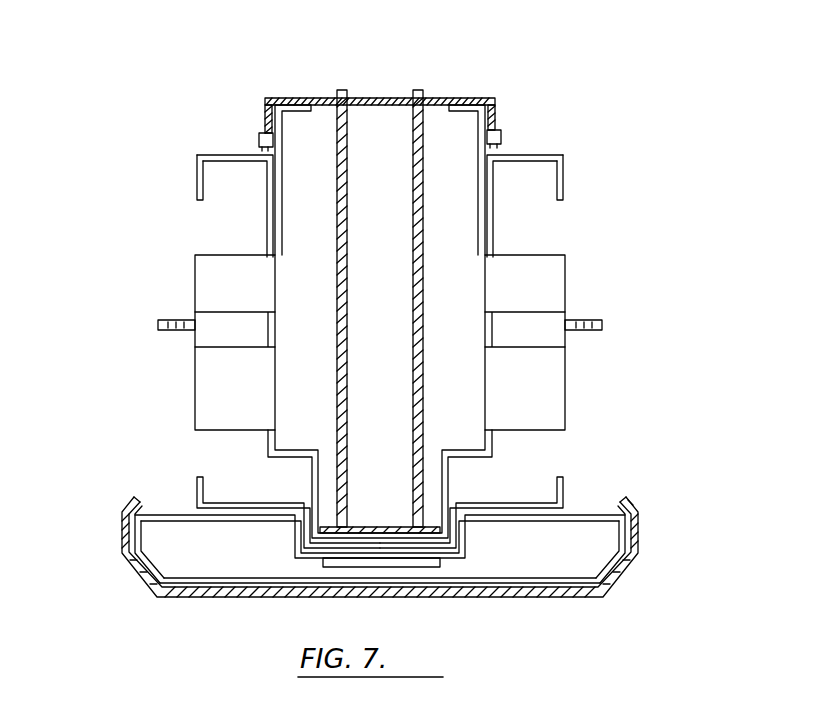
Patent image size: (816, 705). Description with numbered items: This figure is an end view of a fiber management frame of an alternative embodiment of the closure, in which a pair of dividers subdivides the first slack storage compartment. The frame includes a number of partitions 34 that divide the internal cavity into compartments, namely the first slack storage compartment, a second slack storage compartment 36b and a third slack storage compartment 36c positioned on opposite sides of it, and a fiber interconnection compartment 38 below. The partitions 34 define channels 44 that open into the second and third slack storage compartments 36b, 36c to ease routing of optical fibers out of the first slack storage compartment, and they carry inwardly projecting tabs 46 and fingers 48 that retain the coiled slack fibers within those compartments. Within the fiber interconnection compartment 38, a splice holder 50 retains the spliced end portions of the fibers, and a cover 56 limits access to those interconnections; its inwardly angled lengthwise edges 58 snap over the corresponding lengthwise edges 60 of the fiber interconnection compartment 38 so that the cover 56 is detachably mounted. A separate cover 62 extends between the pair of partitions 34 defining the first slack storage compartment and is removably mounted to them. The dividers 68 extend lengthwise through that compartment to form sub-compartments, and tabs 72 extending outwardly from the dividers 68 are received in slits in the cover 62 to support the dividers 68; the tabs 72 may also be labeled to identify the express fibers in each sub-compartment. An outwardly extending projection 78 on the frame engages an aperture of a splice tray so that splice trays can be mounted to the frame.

The partitions 34 is at (297, 140).
The second slack storage compartment 36b is at (527, 177).
The third slack storage compartment 36c is at (232, 180).
The fiber interconnection compartment 38 is at (338, 580).
The channels 44 is at (462, 487).
The tabs 46 is at (195, 175).
The fingers 48 is at (195, 380).
The splice holder 50 is at (440, 562).
The cover 56 is at (575, 597).
The lengthwise extending edges of the cover 58 is at (633, 503).
The lengthwise extending edges of the fiber interconnection compartment 60 is at (153, 568).
The cover for the first slack storage compartment 62 is at (477, 100).
The dividers 68 is at (263, 133).
The tabs 72 is at (410, 90).
The outwardly extending projection 78 is at (163, 321).